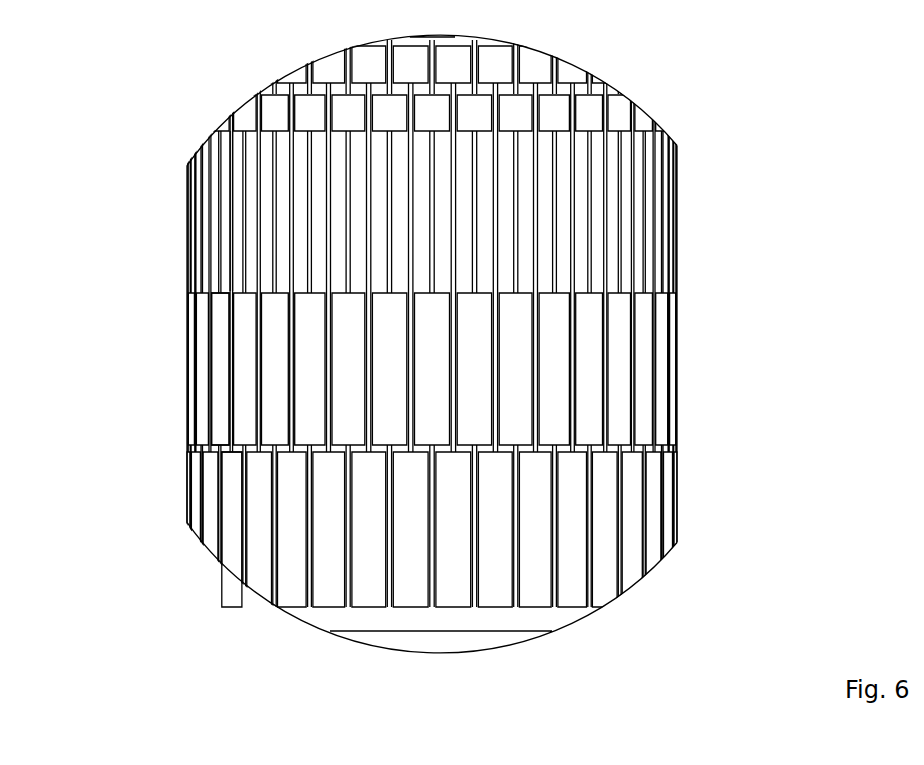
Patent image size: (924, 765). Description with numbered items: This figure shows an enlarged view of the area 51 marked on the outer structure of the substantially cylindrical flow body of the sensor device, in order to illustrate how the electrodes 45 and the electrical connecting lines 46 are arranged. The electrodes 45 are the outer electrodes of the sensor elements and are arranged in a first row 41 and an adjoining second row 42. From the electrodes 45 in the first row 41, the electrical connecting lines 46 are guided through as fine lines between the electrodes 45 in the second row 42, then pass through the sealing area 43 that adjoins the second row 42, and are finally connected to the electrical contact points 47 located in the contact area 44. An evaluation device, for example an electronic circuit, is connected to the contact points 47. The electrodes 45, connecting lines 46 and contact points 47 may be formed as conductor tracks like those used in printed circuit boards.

The area 51 is at (186, 89).
The electrical contact points 47 is at (495, 60).
The electrical connecting lines 46 is at (230, 208).
The electrodes 45 is at (222, 361).
The contact area 44 is at (662, 104).
The sealing area 43 is at (714, 213).
The second row of sensor elements 42 is at (714, 362).
The first row of sensor elements 41 is at (716, 493).